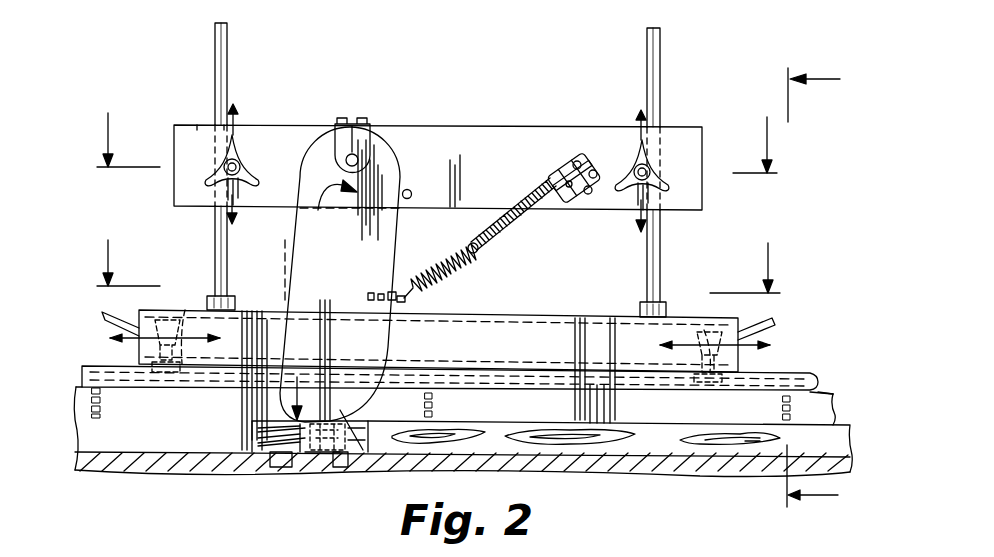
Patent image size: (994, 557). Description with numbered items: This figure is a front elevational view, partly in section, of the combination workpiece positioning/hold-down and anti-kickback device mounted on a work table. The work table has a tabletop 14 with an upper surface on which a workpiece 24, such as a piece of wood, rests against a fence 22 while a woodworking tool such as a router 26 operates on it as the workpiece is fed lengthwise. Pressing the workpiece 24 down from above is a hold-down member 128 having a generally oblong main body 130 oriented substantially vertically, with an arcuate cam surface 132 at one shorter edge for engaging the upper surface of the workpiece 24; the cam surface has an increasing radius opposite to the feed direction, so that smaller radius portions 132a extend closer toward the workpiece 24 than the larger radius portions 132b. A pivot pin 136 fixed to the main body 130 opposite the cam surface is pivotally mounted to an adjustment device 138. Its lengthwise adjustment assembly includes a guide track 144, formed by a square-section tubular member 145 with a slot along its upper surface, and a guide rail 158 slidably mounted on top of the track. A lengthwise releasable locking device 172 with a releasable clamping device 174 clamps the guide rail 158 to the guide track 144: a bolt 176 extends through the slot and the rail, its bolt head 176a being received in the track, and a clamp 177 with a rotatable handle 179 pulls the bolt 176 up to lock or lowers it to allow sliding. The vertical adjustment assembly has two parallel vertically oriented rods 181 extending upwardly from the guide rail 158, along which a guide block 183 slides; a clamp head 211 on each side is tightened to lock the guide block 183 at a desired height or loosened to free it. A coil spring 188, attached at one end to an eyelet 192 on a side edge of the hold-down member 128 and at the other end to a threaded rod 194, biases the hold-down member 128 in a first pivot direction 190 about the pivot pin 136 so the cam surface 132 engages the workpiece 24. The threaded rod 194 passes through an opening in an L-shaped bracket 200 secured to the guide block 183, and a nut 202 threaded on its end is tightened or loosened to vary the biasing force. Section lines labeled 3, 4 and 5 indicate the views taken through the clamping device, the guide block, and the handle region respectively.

The section line 3- 3 is at (825, 289).
The section line 4- 4 is at (437, 128).
The section line 5- 5 is at (438, 251).
The tabletop 14 is at (637, 462).
The fence 22 is at (180, 445).
The workpiece 24 is at (680, 440).
The router 26 is at (311, 460).
The hold-down member 128 is at (275, 258).
The main body 130 is at (320, 150).
The arcuate cam surface 132 is at (333, 458).
The smaller radius portions 132a is at (275, 448).
The support block lower portion 132b is at (358, 452).
The pivot pin 136 is at (382, 130).
The adjustment device 138 is at (546, 62).
The guide track 144 is at (830, 371).
The tubular member 145 is at (800, 373).
The guide rail 158 is at (570, 307).
The lengthwise releasable locking device 172 is at (796, 304).
The releasable clamping device 174 is at (704, 330).
The bolt 176 is at (140, 355).
The bolt head 176a is at (715, 400).
The clamp 177 is at (185, 310).
The rotatable handle 179 is at (100, 313).
The vertically oriented rods 181 is at (213, 32).
The guide block 183 is at (197, 125).
The coil spring 188 is at (456, 272).
The first pivot direction 190 is at (337, 207).
The eyelet 192 is at (401, 290).
The threaded rod 194 is at (505, 232).
The L-shaped bracket 200 is at (545, 174).
The nut 202 is at (560, 168).
The clamp head 211 is at (205, 172).